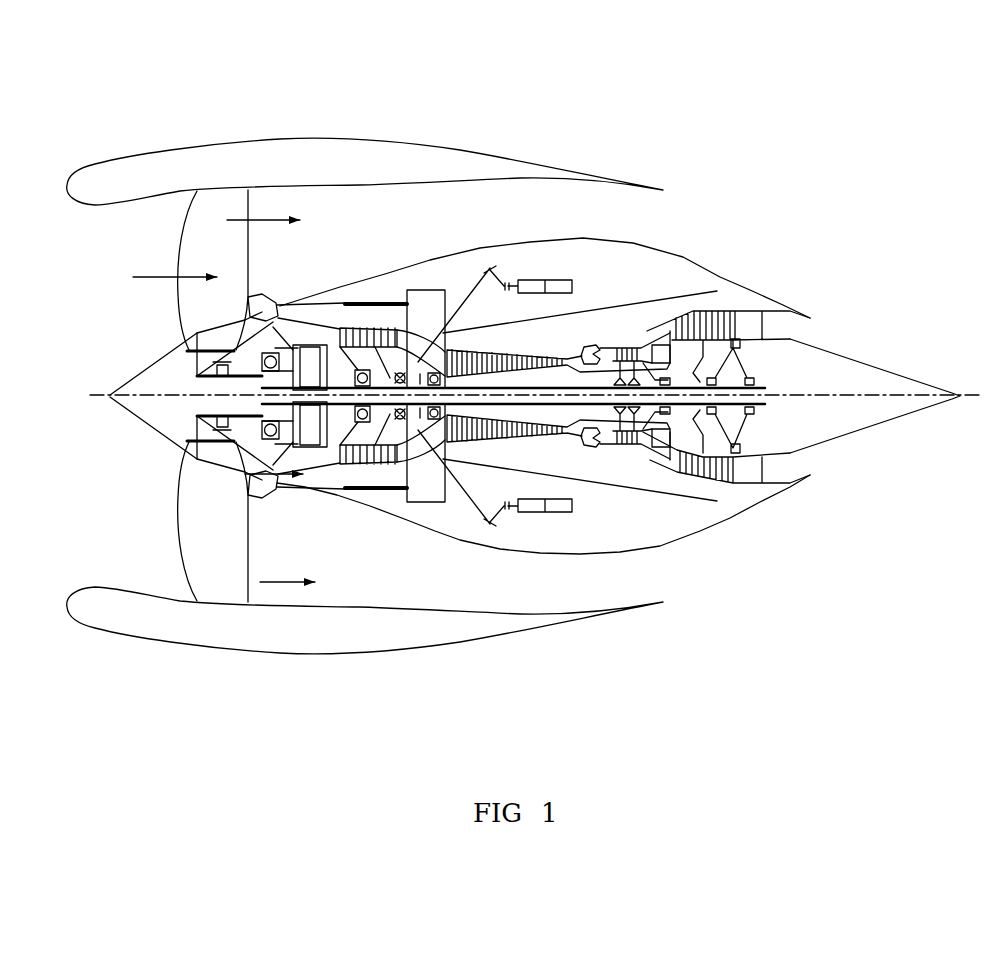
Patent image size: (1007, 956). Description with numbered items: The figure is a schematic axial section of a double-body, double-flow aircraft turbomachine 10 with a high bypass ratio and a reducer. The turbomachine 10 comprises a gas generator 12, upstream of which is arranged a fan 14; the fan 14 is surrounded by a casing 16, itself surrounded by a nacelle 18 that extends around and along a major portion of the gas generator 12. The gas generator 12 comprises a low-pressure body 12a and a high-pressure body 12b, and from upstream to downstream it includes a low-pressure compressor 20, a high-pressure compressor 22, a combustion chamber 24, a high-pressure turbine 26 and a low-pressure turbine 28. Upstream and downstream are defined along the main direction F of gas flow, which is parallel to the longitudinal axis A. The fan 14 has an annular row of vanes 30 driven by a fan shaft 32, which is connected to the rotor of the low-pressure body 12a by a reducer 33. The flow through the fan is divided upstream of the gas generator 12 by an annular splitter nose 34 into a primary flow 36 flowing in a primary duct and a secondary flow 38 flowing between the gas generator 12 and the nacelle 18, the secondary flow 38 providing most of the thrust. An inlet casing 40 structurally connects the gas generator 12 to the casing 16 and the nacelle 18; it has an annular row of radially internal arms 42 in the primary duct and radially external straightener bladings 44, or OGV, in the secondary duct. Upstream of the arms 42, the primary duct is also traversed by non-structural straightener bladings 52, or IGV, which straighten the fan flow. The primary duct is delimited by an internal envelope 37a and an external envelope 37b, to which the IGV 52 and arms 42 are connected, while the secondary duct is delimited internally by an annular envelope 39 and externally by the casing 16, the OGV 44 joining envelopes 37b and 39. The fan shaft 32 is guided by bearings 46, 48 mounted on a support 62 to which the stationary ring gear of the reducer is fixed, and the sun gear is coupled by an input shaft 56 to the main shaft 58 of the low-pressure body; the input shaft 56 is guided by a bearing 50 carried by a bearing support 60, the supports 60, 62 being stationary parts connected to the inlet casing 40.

The turbomachine 10 is at (798, 181).
The gas generator 12 is at (437, 276).
The low-pressure body 12a is at (360, 484).
The high-pressure body 12b is at (538, 443).
The fan 14 is at (185, 568).
The casing 16 is at (223, 603).
The nacelle 18 is at (156, 165).
The low-pressure compressor 20 is at (445, 504).
The high-pressure compressor 22 is at (528, 440).
The combustion chamber 24 is at (597, 345).
The high-pressure turbine 26 is at (630, 347).
The low-pressure turbine 28 is at (718, 305).
The vanes 30 is at (228, 200).
The fan shaft 32 is at (196, 385).
The reducer 33 is at (313, 470).
The splitter nose 34 is at (247, 535).
The primary flow 36 is at (250, 505).
The internal annular envelope 37a is at (345, 490).
The external annular envelope 37b is at (340, 298).
The secondary flow 38 is at (262, 300).
The annular envelope 39 is at (452, 288).
The inlet casing 40 is at (305, 262).
The radially internal arms 42 is at (337, 486).
The radially external straightener bladings 44 is at (378, 298).
The bearing 46 is at (258, 430).
The bearing 48 is at (262, 463).
The bearing 50 is at (364, 467).
The straightener bladings 52 is at (253, 310).
The input shaft 56 is at (277, 303).
The main shaft 58 is at (500, 378).
The bearing support 60 is at (321, 273).
The support 62 is at (257, 488).
The longitudinal axis A is at (890, 397).
The main direction of flow F is at (160, 276).